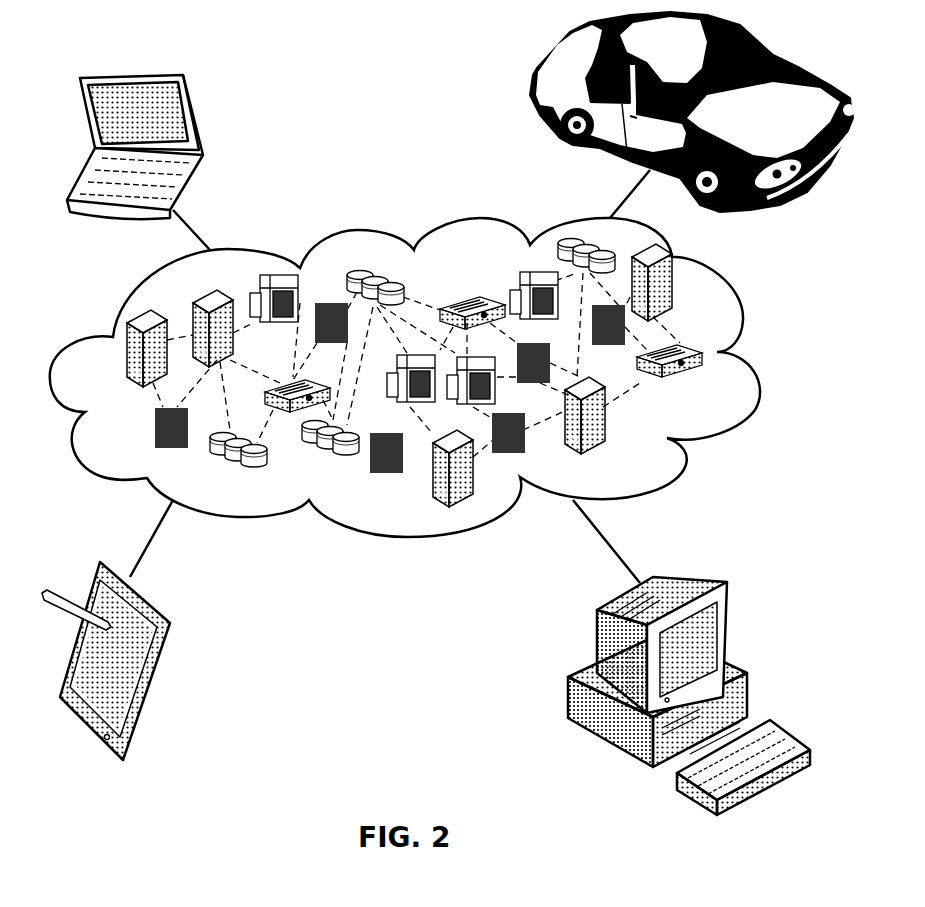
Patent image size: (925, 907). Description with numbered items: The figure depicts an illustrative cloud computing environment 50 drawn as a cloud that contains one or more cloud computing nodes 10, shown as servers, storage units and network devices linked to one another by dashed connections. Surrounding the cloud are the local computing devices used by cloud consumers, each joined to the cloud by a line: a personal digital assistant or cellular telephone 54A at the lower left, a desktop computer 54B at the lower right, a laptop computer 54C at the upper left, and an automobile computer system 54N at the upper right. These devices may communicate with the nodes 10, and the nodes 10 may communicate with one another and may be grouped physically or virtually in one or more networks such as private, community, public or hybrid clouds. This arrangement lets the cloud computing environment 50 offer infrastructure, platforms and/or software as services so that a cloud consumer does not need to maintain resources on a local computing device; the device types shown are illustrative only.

The cloud computing nodes 10 is at (718, 386).
The cloud computing environment 50 is at (757, 354).
The personal digital assistant (PDA) or cellular telephone 54A is at (163, 650).
The desktop computer 54B is at (693, 572).
The laptop computer 54C is at (197, 117).
The automobile computer system 54N is at (532, 90).